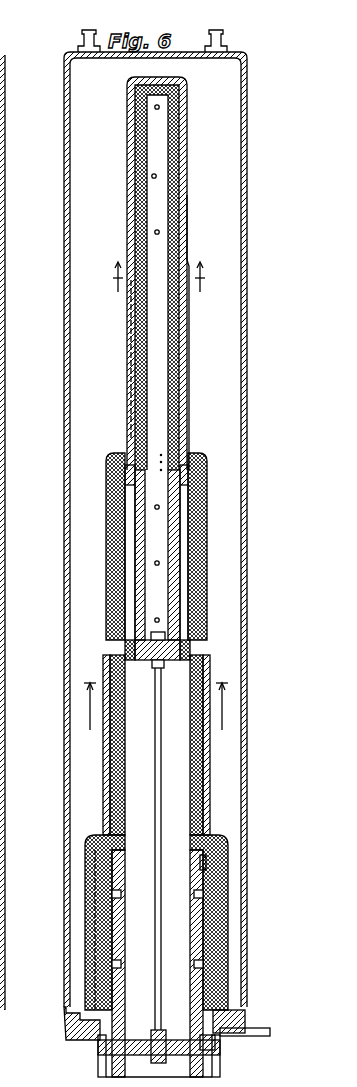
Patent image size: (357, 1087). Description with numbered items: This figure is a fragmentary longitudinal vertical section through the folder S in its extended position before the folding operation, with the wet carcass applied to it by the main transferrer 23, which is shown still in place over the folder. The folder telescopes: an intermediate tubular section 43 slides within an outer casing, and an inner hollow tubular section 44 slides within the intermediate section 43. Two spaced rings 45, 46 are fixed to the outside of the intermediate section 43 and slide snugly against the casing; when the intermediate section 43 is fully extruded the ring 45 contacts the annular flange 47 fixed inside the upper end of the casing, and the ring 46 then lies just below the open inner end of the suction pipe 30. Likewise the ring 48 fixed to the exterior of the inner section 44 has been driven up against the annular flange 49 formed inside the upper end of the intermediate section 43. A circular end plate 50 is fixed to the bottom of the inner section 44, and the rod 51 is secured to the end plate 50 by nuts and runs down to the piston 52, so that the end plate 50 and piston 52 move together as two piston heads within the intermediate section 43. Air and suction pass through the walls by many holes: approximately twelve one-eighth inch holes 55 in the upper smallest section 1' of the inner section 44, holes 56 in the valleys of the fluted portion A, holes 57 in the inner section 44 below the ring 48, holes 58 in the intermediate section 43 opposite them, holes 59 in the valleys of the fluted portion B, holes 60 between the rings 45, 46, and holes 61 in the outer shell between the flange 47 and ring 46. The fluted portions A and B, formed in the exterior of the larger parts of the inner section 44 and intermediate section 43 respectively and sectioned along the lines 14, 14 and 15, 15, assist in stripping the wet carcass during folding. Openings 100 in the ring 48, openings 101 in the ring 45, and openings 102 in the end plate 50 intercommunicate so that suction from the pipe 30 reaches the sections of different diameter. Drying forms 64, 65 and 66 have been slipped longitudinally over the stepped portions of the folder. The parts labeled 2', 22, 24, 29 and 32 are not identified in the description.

The upper smallest section 1' is at (135, 273).
The inner lining of upper tube 2' is at (131, 277).
The section line 14- 14 is at (154, 277).
The section line 15- 15 is at (156, 706).
The base block 22 is at (66, 1018).
The main transferrer 23 is at (64, 355).
The terminal 24 is at (228, 42).
The terminal 29 is at (80, 42).
The suction pipe 30 is at (255, 1030).
The tube wall step 32 is at (210, 318).
The intermediate tubular section 43 is at (171, 745).
The inner hollow tubular section 44 is at (145, 195).
The ring 45 is at (196, 862).
The ring 46 is at (215, 1045).
The annular flange 47 is at (208, 840).
The ring 48 is at (207, 482).
The annular flange 49 is at (201, 456).
The circular end plate 50 is at (200, 640).
The rod 51 is at (155, 917).
The piston 52 is at (110, 1050).
The holes 55 is at (157, 172).
The holes 56 is at (127, 385).
The holes 57 is at (138, 565).
The holes 58 is at (107, 555).
The holes 59 is at (100, 800).
The holes 60 is at (112, 893).
The holes 61 is at (85, 905).
The drying form 64 is at (200, 200).
The drying form 65 is at (107, 565).
The drying form 66 is at (228, 870).
The openings 100 is at (110, 470).
The openings 101 is at (85, 865).
The openings 102 is at (125, 645).
The fluted portion A is at (187, 353).
The fluted portion B is at (197, 740).
The folder S is at (211, 386).